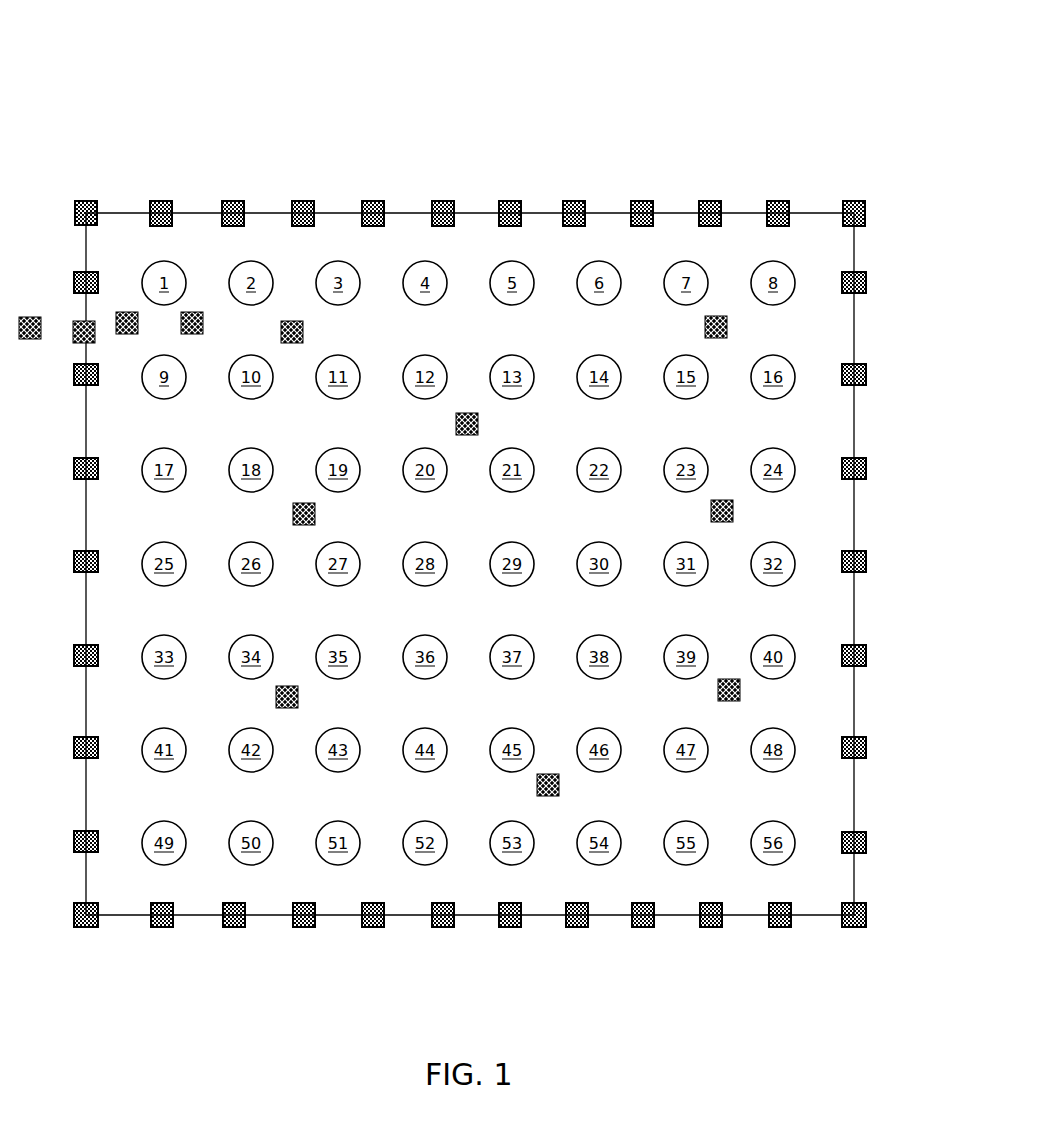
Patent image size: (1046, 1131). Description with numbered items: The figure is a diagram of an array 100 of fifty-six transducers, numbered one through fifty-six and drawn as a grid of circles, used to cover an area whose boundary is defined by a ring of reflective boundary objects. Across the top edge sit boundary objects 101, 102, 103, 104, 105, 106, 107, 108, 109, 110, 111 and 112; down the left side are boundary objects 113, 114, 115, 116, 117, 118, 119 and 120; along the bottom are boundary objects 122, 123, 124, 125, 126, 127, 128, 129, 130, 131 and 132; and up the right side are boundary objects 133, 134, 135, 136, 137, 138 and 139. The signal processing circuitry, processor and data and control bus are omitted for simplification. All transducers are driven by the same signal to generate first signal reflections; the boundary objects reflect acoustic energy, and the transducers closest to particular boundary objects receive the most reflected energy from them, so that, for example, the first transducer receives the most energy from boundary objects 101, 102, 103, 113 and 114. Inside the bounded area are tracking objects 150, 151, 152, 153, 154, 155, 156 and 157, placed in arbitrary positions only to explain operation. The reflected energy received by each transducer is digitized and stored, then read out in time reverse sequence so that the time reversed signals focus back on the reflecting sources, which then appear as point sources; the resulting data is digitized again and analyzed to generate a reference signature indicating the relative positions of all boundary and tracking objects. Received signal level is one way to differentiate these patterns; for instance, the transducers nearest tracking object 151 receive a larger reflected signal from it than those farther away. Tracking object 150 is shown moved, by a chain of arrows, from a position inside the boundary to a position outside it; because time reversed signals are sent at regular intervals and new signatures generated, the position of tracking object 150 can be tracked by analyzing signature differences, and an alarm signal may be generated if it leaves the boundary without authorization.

The array 100 is at (562, 88).
The boundary object 101 is at (88, 200).
The boundary object 102 is at (161, 200).
The boundary object 103 is at (233, 200).
The boundary object 104 is at (303, 200).
The boundary object 105 is at (373, 200).
The boundary object 106 is at (443, 200).
The boundary object 107 is at (510, 200).
The boundary object 108 is at (578, 198).
The boundary object 109 is at (642, 200).
The boundary object 110 is at (708, 198).
The boundary object 111 is at (778, 200).
The boundary object 112 is at (856, 198).
The boundary object 113 is at (80, 272).
The boundary object 114 is at (78, 382).
The boundary object 115 is at (78, 476).
The boundary object 116 is at (78, 570).
The boundary object 117 is at (78, 663).
The boundary object 118 is at (78, 756).
The boundary object 119 is at (78, 850).
The boundary object 120 is at (86, 927).
The boundary object 122 is at (162, 927).
The boundary object 123 is at (234, 927).
The boundary object 124 is at (304, 927).
The boundary object 125 is at (373, 927).
The boundary object 126 is at (443, 927).
The boundary object 127 is at (510, 927).
The boundary object 128 is at (577, 927).
The boundary object 129 is at (643, 927).
The boundary object 130 is at (712, 927).
The boundary object 131 is at (780, 927).
The boundary object 132 is at (853, 927).
The boundary object 133 is at (860, 838).
The boundary object 134 is at (862, 742).
The boundary object 135 is at (862, 650).
The boundary object 136 is at (862, 555).
The boundary object 137 is at (862, 462).
The boundary object 138 is at (862, 370).
The boundary object 139 is at (862, 278).
The tracking object 150 is at (72, 332).
The tracking object 151 is at (705, 327).
The tracking object 152 is at (478, 422).
The tracking object 153 is at (315, 512).
The tracking object 154 is at (711, 511).
The tracking object 155 is at (274, 699).
The tracking object 156 is at (718, 694).
The tracking object 157 is at (560, 790).